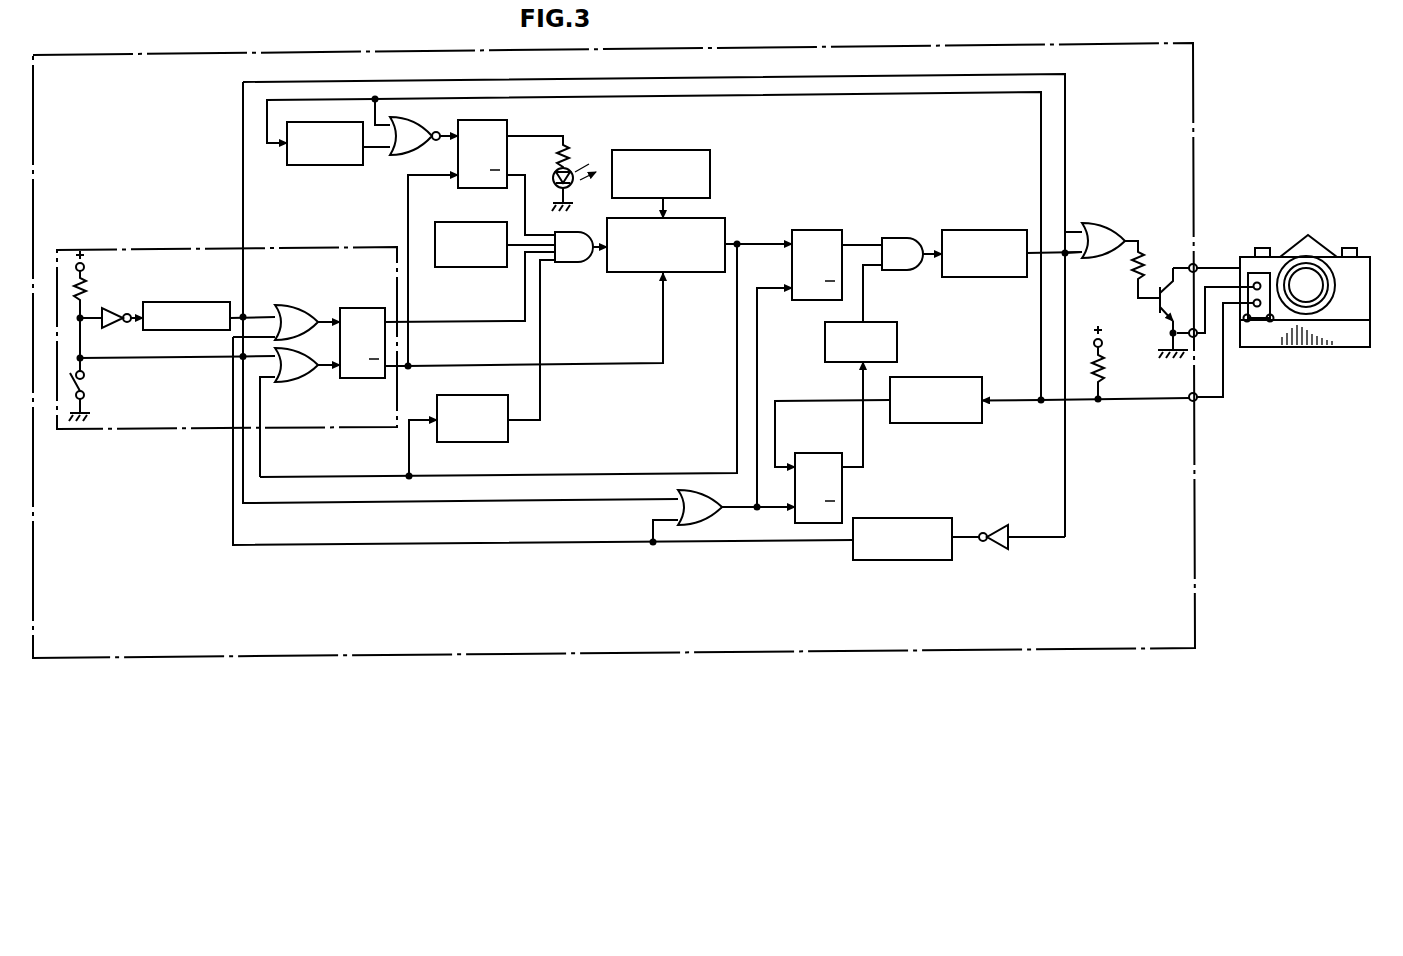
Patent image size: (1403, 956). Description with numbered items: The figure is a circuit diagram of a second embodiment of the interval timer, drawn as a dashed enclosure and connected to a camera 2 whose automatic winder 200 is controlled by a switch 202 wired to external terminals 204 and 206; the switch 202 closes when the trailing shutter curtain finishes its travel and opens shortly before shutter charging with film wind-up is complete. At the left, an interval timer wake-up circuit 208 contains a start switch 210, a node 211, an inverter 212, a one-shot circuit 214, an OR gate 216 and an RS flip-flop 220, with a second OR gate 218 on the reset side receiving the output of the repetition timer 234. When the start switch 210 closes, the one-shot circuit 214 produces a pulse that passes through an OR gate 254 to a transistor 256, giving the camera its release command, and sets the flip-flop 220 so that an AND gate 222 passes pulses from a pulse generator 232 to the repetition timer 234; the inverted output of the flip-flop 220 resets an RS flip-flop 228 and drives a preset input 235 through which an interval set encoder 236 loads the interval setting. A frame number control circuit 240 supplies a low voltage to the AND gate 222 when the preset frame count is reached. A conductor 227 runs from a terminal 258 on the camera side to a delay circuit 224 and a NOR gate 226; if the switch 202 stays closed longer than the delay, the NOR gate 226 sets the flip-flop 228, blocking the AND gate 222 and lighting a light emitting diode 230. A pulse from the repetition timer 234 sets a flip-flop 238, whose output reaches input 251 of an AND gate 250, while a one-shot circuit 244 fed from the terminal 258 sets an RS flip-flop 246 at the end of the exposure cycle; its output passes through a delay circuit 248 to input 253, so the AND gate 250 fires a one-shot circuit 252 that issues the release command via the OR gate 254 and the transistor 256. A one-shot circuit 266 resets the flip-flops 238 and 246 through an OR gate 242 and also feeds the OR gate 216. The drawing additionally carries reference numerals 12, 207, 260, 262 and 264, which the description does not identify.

The control circuit 12 is at (325, 46).
The camera 2 is at (1309, 315).
The automatic winder 200 is at (1333, 348).
The switch 202 is at (1268, 322).
The external terminal 204 is at (1225, 358).
The external terminal 206 is at (1223, 287).
The connection line 207 is at (1213, 262).
The interval timer wake-up circuit 208 is at (195, 431).
The start switch 210 is at (88, 378).
The node 211 is at (83, 356).
The inverter 212 is at (107, 306).
The one-shot circuit 214 is at (209, 294).
The OR gate 216 is at (288, 305).
The OR gate 218 is at (311, 382).
The RS flip-flop 220 is at (357, 307).
The AND gate 222 is at (591, 263).
The delay circuit 224 is at (303, 166).
The NOR gate 226 is at (395, 160).
The conductor 227 is at (848, 78).
The RS flip-flop 228 is at (478, 189).
The light emitting diode 230 is at (572, 160).
The pulse generator 232 is at (441, 268).
The repetition timer 234 is at (625, 274).
The preset input 235 is at (666, 287).
The interval set encoder 236 is at (665, 150).
The flip-flop 238 is at (797, 230).
The frame number control circuit 240 is at (455, 397).
The OR gate 242 is at (660, 506).
The one-shot circuit 244 is at (950, 424).
The RS flip-flop 246 is at (818, 453).
The delay circuit 248 is at (898, 340).
The AND gate 250 is at (915, 238).
The input 251 is at (858, 244).
The one-shot circuit 252 is at (988, 230).
The input 253 is at (877, 275).
The OR gate 254 is at (1100, 226).
The transistor 256 is at (1160, 305).
The terminal 258 is at (1147, 401).
The resistor 260 is at (1188, 350).
The resistor 262 is at (1143, 256).
The inverter 264 is at (1000, 550).
The one-shot circuit 266 is at (897, 562).